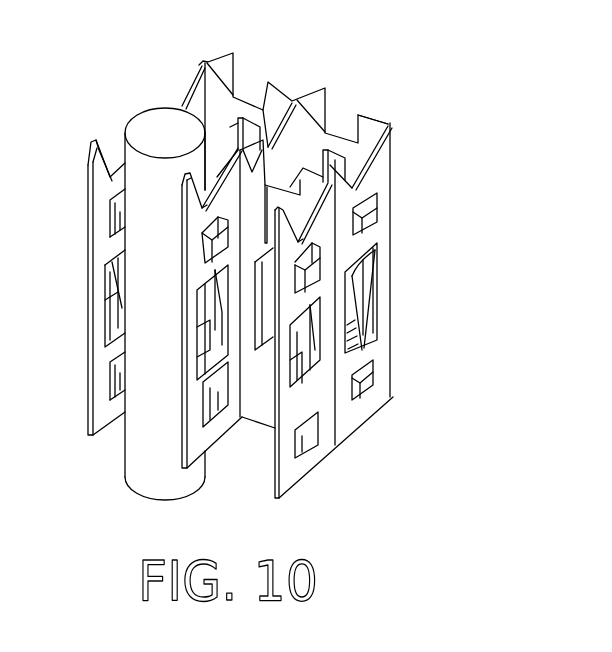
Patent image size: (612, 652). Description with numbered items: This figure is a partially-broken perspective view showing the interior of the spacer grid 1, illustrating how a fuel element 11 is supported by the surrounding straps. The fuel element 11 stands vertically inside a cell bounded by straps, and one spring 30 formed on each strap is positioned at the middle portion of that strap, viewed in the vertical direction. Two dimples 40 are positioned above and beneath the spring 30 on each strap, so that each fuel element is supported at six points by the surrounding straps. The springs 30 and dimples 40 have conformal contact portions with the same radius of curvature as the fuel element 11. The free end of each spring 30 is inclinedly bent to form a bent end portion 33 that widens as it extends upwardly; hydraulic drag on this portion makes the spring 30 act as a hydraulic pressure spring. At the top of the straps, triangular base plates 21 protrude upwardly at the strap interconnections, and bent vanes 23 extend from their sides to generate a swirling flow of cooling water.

The spacer grid 1 is at (384, 52).
The fuel element 11 is at (150, 256).
The base plate 21 is at (385, 157).
The vane 23 is at (322, 104).
The spring 30 is at (333, 263).
The bent end portion 33 is at (340, 305).
The dimple 40 is at (317, 272).